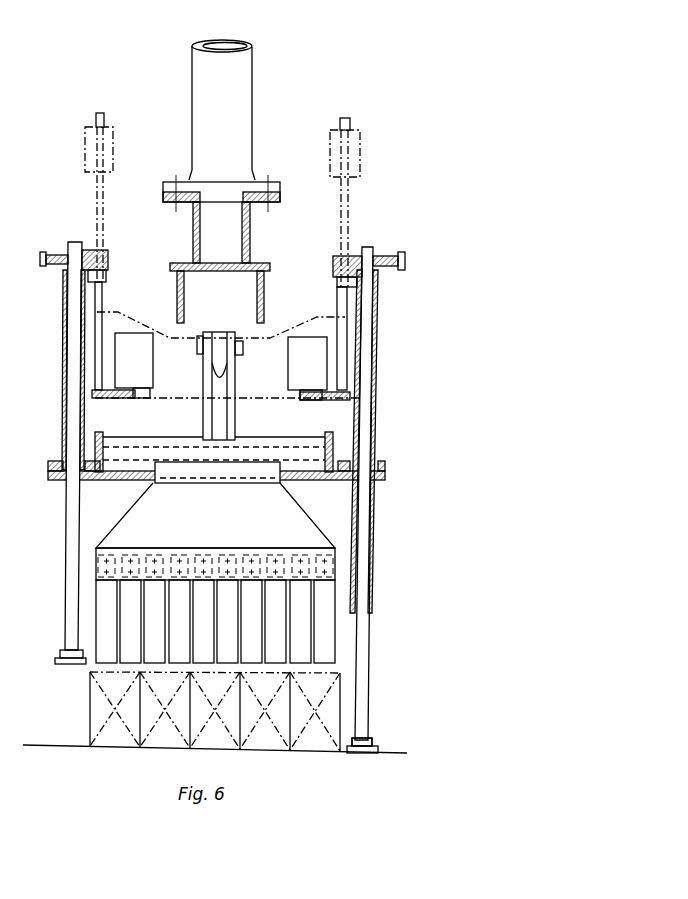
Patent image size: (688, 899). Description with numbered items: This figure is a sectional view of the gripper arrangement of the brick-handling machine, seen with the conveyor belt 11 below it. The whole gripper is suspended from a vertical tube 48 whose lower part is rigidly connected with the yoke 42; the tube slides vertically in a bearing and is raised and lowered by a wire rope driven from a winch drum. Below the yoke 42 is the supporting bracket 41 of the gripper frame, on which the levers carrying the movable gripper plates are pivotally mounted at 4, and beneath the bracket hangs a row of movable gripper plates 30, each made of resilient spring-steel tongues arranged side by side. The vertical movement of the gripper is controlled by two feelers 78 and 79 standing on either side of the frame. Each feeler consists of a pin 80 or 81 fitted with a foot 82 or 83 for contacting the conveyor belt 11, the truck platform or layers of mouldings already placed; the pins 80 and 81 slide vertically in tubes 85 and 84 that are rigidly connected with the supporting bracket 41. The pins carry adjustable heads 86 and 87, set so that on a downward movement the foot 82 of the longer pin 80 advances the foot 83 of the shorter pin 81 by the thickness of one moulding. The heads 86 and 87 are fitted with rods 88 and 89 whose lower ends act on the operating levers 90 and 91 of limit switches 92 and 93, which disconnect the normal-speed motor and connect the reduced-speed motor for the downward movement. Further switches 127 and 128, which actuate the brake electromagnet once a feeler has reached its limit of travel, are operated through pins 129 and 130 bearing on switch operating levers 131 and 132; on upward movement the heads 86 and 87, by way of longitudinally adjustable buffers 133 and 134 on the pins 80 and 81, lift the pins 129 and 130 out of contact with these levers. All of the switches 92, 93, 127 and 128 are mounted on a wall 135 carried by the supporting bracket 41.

The pivot 4 is at (184, 447).
The conveyor belt 11 is at (88, 746).
The movable gripper plate 30 is at (123, 613).
The supporting bracket 41 is at (131, 481).
The yoke 42 is at (262, 265).
The tube 48 is at (256, 124).
The feeler 78 is at (373, 738).
The feeler 79 is at (56, 649).
The pin 80 is at (370, 657).
The pin 81 is at (67, 560).
The foot 82 is at (365, 754).
The foot 83 is at (60, 664).
The tube 84 is at (378, 353).
The tube 85 is at (64, 352).
The adjustable head 86 is at (376, 255).
The adjustable head 87 is at (68, 252).
The rod 88 is at (349, 323).
The rod 89 is at (95, 312).
The operating lever 90 is at (309, 408).
The operating lever 91 is at (129, 407).
The limit switch 92 is at (285, 368).
The limit switch 93 is at (159, 365).
The switch 127 is at (290, 357).
The switch 128 is at (153, 354).
The pin 129 is at (348, 210).
The pin 130 is at (96, 196).
The switch operating lever 131 is at (309, 408).
The switch operating lever 132 is at (129, 407).
The buffer 133 is at (358, 154).
The buffer 134 is at (85, 150).
The wall 135 is at (318, 320).